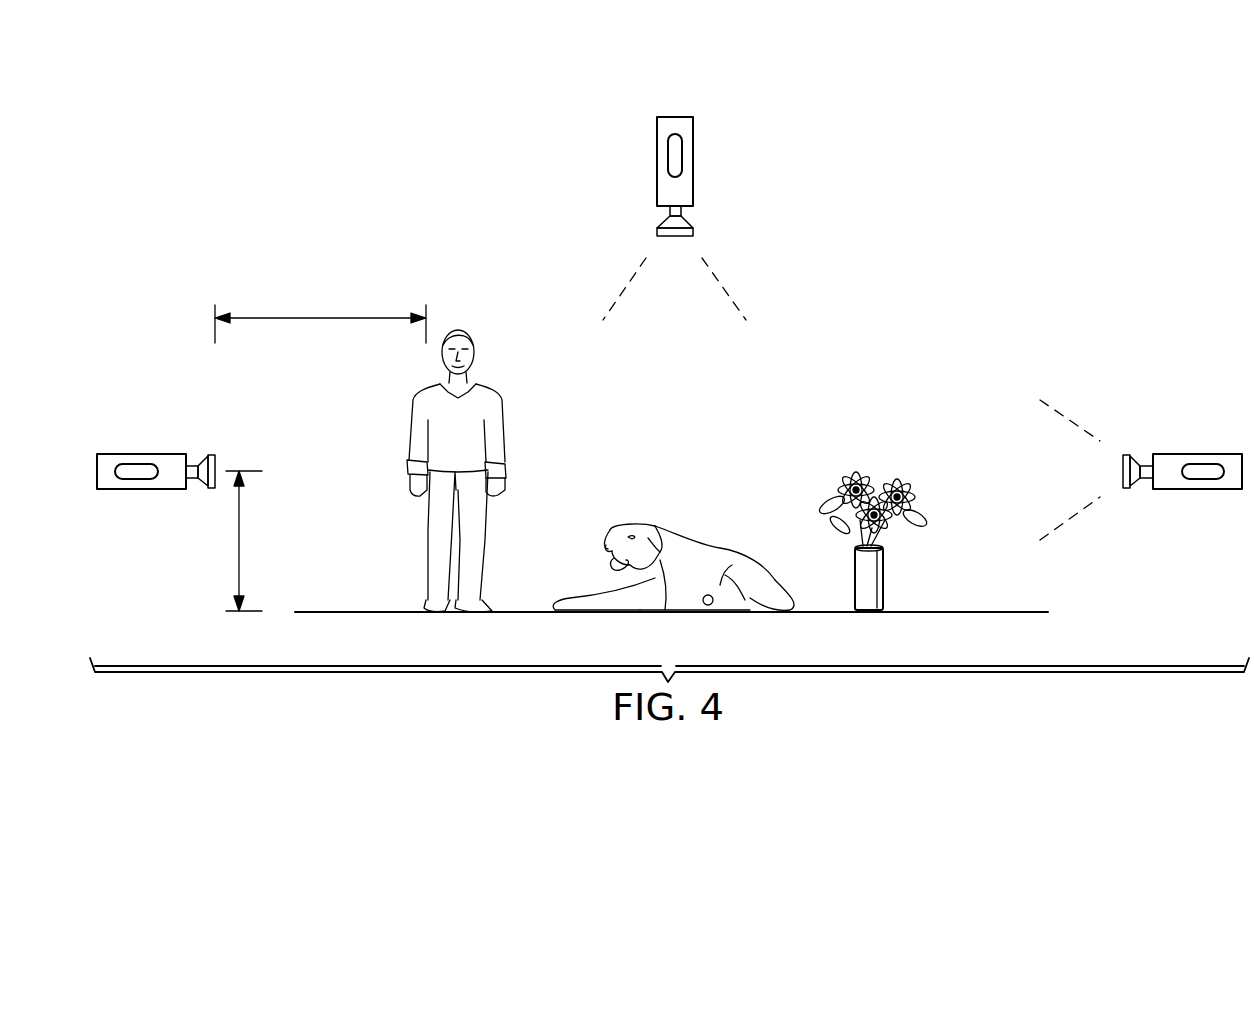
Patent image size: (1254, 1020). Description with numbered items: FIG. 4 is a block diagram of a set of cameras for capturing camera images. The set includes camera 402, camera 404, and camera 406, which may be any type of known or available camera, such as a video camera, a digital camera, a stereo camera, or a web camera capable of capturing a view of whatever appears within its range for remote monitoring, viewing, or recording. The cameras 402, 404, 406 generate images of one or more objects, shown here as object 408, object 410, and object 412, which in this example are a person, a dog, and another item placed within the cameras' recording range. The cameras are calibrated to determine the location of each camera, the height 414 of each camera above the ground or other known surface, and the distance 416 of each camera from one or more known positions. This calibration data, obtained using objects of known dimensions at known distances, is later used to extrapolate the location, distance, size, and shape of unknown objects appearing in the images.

The camera 402 is at (668, 117).
The camera 404 is at (138, 454).
The camera 406 is at (1195, 489).
The object 408 is at (503, 422).
The object 410 is at (690, 548).
The object 412 is at (886, 586).
The height 414 is at (237, 541).
The distance 416 is at (321, 316).